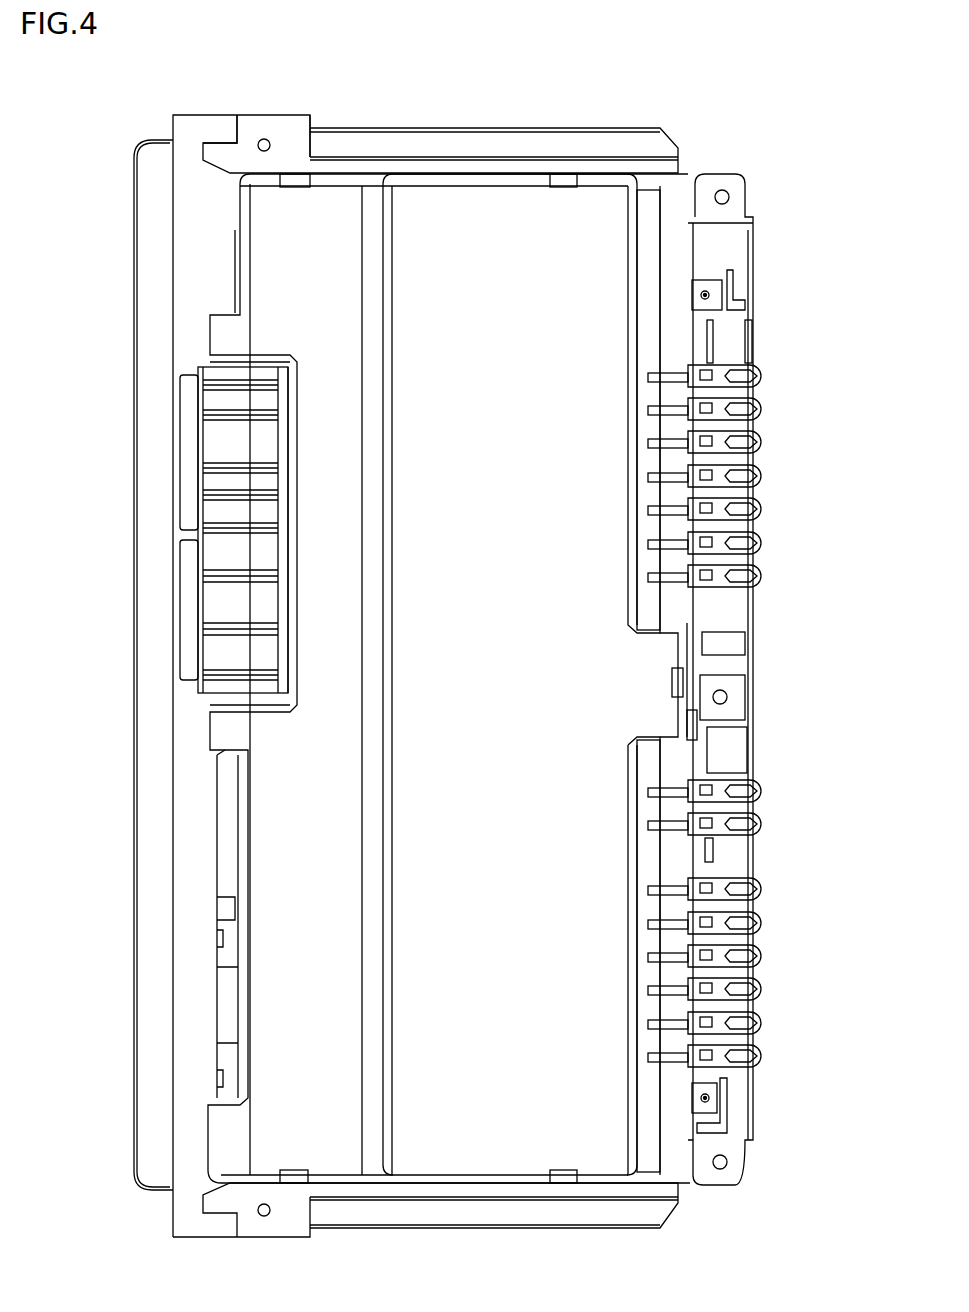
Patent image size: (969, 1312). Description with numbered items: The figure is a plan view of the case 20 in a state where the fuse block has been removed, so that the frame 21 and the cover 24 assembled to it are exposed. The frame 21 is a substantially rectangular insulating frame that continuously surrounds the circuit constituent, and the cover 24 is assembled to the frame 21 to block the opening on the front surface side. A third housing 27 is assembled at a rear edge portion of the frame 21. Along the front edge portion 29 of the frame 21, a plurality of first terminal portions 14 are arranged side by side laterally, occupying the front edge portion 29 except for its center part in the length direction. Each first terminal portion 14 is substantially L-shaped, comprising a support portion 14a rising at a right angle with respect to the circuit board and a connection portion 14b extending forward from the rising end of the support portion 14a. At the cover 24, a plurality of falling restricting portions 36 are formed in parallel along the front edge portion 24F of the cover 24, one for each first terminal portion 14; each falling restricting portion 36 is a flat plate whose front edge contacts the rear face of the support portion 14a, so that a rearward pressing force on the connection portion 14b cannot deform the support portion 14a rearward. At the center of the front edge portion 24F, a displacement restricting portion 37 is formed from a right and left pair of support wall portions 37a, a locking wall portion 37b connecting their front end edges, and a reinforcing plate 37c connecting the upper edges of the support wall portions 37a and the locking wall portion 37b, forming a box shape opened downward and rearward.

The case 20 is at (662, 110).
The frame 21 is at (278, 136).
The cover 24 is at (480, 233).
The front edge portion of the cover 24F is at (669, 763).
The third housing 27 is at (220, 602).
The front edge portion of the frame 29 is at (673, 602).
The first terminal portion 14 is at (753, 679).
The support portion 14a is at (688, 402).
The connection portion 14b is at (735, 402).
The falling restricting portion 36 is at (663, 505).
The displacement restricting portion 37 is at (755, 699).
The support wall portion 37a is at (657, 621).
The locking wall portion 37b is at (747, 704).
The reinforcing plate 37c is at (645, 657).